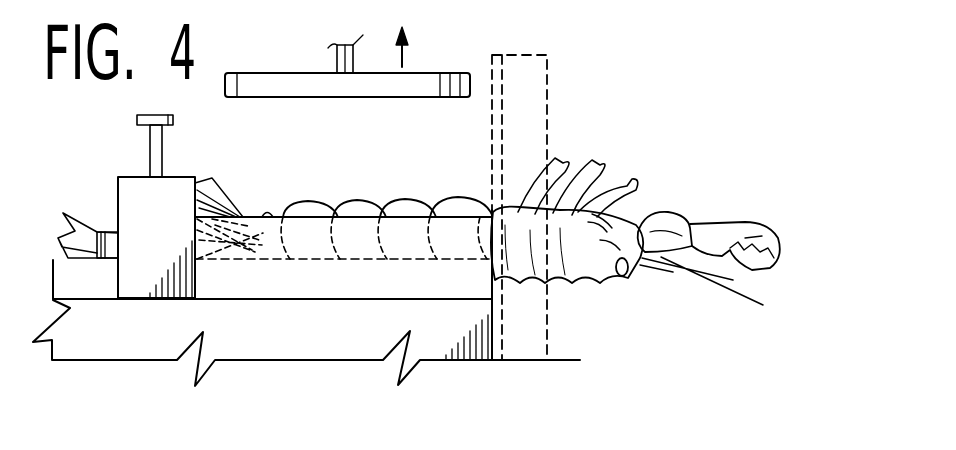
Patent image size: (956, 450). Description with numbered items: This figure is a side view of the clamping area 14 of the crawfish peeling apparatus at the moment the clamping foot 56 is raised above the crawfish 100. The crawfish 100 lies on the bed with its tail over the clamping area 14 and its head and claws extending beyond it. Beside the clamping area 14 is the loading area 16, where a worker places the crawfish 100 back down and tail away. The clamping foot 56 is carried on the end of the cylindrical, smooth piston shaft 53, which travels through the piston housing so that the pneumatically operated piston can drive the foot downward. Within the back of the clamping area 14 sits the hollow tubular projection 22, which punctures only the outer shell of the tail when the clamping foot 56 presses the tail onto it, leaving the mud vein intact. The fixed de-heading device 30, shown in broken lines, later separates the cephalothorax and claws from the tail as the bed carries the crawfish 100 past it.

The clamping area 14 is at (442, 290).
The loading area 16 is at (314, 347).
The hollow tubular projection 22 is at (236, 253).
The de-heading device 30 is at (525, 125).
The piston shaft 53 is at (340, 60).
The clamping foot 56 is at (312, 90).
The crawfish 100 is at (648, 178).